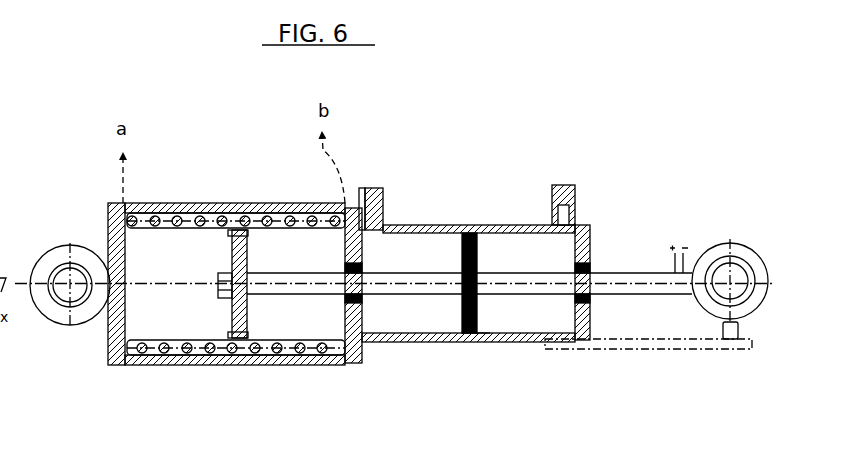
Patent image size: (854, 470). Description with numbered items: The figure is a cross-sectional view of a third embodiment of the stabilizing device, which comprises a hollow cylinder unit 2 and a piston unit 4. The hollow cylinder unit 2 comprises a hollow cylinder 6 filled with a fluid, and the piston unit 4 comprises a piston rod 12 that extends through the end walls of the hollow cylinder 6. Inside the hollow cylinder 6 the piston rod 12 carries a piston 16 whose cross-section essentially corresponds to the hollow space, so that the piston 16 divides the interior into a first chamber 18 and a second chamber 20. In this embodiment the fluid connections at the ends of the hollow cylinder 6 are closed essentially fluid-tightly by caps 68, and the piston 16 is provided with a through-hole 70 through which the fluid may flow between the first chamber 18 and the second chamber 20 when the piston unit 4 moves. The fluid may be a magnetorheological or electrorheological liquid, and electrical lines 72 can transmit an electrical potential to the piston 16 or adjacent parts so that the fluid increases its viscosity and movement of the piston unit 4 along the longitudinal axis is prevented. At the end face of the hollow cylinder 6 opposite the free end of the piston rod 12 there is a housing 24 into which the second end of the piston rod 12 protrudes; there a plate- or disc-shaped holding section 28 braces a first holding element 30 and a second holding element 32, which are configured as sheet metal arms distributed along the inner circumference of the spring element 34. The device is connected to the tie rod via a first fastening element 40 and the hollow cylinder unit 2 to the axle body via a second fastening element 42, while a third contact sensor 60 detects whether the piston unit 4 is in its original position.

The hollow cylinder unit 2 is at (337, 386).
The piston unit 4 is at (652, 221).
The hollow cylinder 6 is at (522, 343).
The piston rod 12 is at (288, 288).
The piston 16 is at (476, 343).
The first chamber 18 is at (418, 271).
The second chamber 20 is at (558, 268).
The housing 24 is at (248, 366).
The holding section 28 is at (232, 303).
The first holding element 30 is at (292, 229).
The second holding element 32 is at (178, 229).
The spring element 34 is at (165, 355).
The first fastening element 40 is at (749, 257).
The second fastening element 42 is at (53, 256).
The third contact sensor 60 is at (732, 339).
The caps 68 is at (370, 188).
The through-hole 70 is at (477, 255).
The electrical lines 72 is at (680, 243).